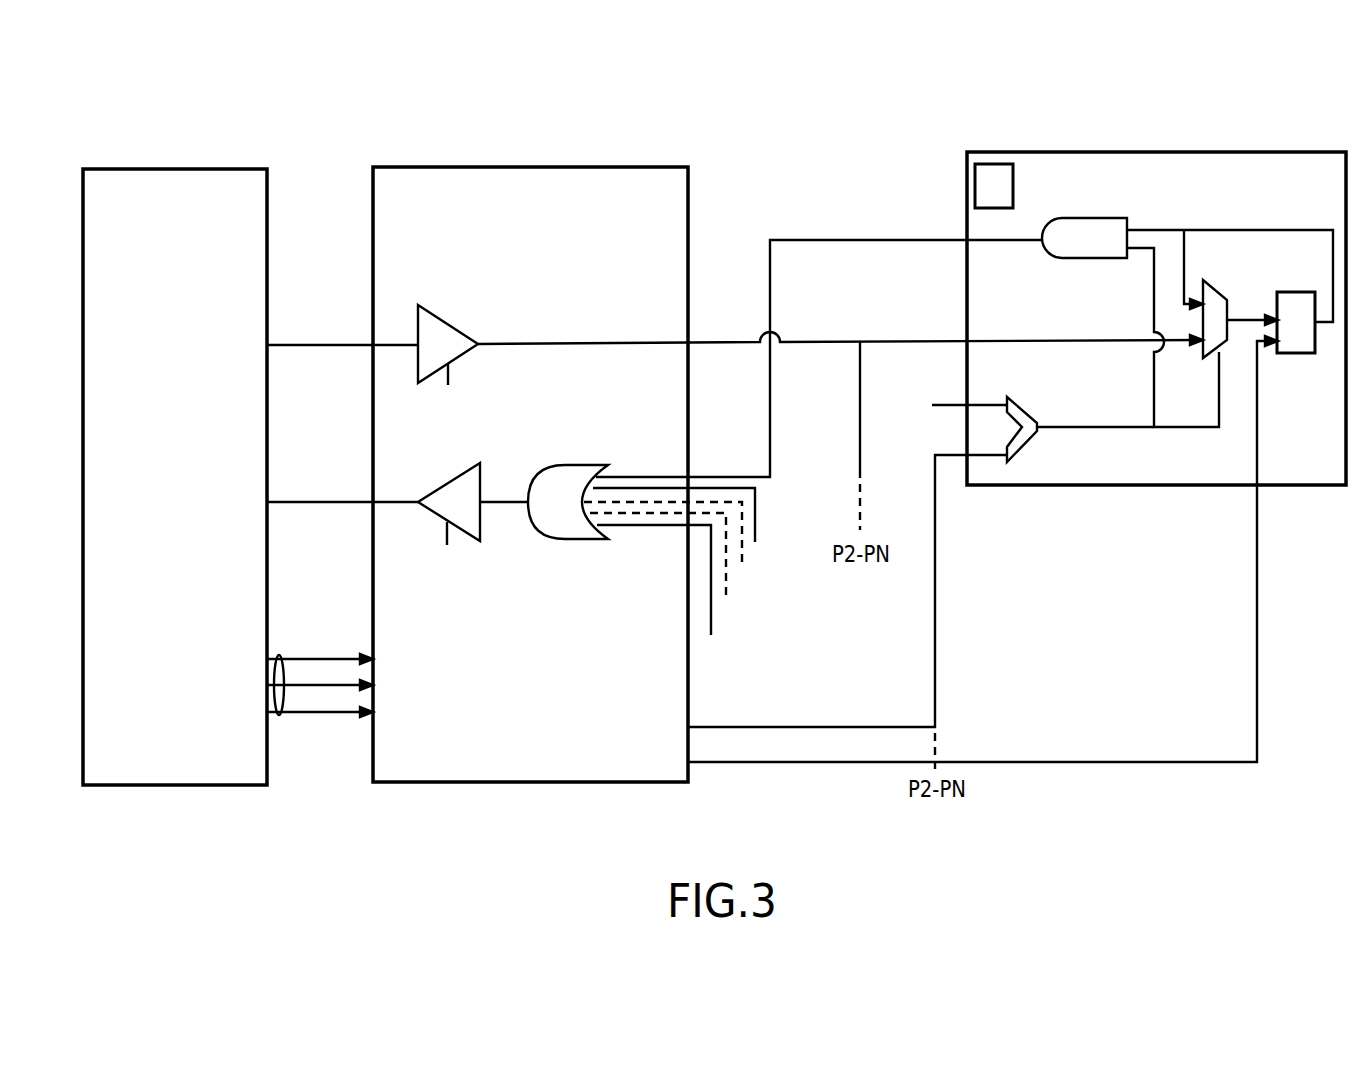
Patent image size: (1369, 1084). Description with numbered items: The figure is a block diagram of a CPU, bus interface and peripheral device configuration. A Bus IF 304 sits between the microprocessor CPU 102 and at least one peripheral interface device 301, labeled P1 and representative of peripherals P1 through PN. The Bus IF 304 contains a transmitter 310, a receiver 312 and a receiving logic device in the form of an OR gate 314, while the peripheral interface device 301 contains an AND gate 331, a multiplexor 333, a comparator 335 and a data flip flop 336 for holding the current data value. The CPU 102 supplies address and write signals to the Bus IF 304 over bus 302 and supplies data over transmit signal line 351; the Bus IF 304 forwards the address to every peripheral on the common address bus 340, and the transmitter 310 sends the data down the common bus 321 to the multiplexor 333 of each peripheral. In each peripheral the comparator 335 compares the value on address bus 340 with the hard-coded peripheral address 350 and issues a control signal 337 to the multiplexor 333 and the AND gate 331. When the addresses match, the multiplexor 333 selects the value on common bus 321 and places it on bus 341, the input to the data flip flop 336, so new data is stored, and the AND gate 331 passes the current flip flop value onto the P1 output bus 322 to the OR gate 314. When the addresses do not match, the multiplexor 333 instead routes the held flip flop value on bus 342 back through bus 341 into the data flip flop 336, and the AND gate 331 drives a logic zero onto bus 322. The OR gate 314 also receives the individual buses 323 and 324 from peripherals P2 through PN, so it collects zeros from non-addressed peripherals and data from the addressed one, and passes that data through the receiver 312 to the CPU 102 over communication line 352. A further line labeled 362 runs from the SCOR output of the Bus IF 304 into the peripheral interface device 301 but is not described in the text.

The CPU 102 is at (212, 169).
The Bus IF 304 is at (467, 167).
The transmit signal line 351 is at (322, 345).
The communication line 352 is at (322, 502).
The transmitter 310 is at (440, 318).
The receiver 312 is at (447, 467).
The OR gate 314 is at (572, 465).
The P1 output bus 322 is at (706, 462).
The common bus 321 is at (806, 340).
The individual bus 323 is at (757, 528).
The individual bus 324 is at (712, 626).
The peripheral address 350 is at (930, 405).
The peripheral interface device 301 is at (1070, 152).
The AND gate 331 is at (1090, 218).
The bus 342 is at (1225, 228).
The multiplexor 333 is at (1215, 290).
The control signal 337 is at (1156, 372).
The bus 341 is at (1240, 323).
The data flip flop 336 is at (1300, 353).
The comparator 335 is at (1030, 440).
The common address bus 340 is at (935, 620).
The SCOR line 362 is at (1257, 605).
The bus 302 is at (283, 708).